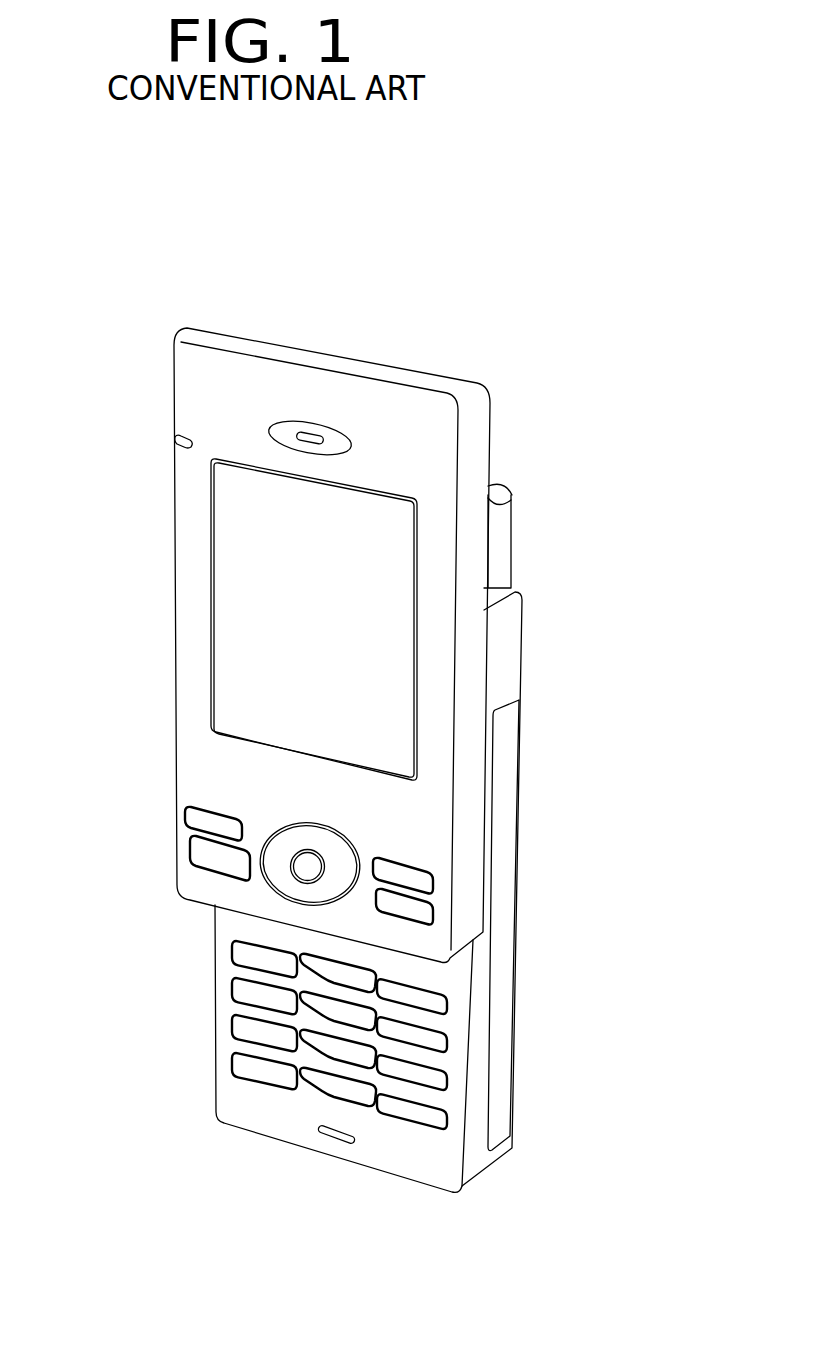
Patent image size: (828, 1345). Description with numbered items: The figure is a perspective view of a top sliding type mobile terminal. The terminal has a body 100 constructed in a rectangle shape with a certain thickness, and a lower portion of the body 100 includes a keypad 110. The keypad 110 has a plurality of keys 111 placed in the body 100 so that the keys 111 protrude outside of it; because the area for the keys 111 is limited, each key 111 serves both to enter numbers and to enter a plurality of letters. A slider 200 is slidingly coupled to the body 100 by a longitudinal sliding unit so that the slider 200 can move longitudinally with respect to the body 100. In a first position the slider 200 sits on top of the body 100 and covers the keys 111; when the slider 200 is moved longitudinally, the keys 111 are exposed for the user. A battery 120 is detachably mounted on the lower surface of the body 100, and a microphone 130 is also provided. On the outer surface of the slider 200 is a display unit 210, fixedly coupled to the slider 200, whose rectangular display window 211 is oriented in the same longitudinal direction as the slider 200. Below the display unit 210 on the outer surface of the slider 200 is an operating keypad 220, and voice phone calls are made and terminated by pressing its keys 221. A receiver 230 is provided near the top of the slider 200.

The body 100 is at (532, 606).
The keypad 110 is at (296, 1106).
The keys 111 is at (430, 1115).
The battery 120 is at (505, 875).
The microphone 130 is at (327, 1139).
The slider 200 is at (469, 376).
The display unit 210 is at (237, 619).
The display window 211 is at (240, 577).
The operating keypad 220 is at (263, 883).
The keys 221 is at (297, 882).
The receiver 230 is at (308, 412).